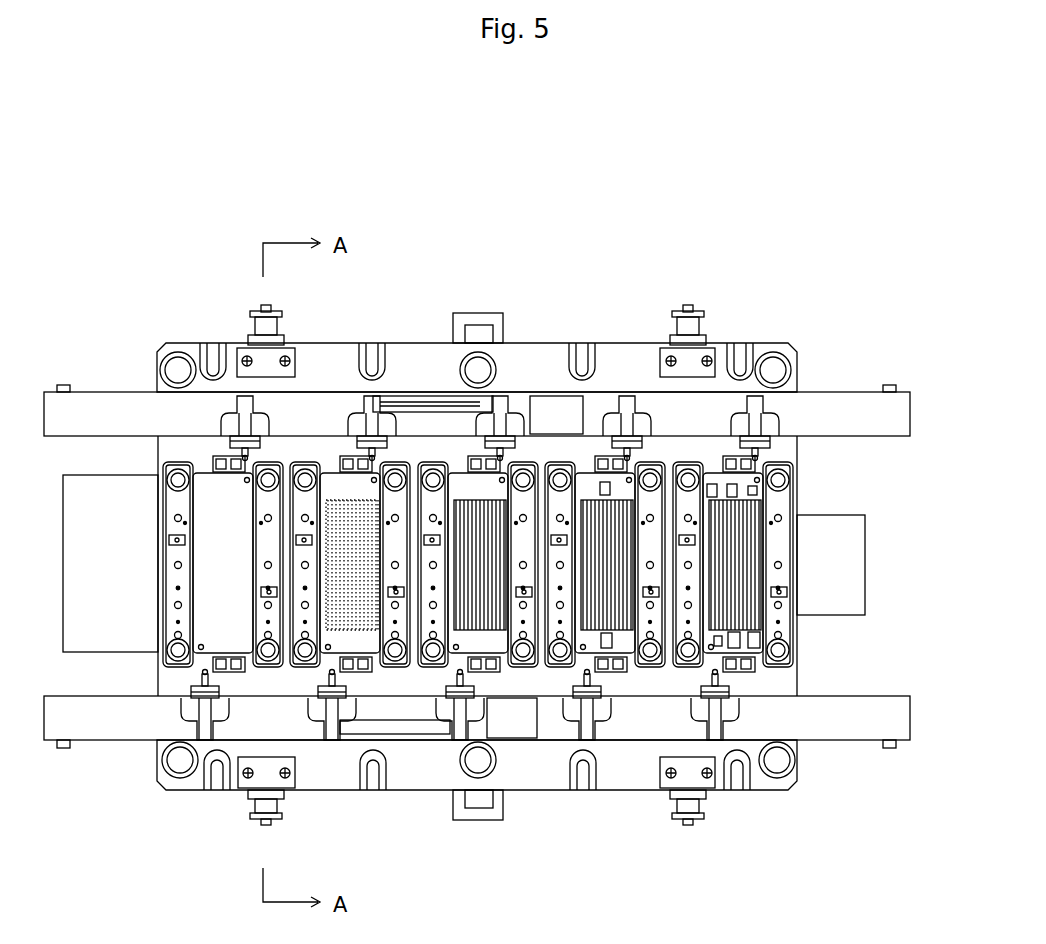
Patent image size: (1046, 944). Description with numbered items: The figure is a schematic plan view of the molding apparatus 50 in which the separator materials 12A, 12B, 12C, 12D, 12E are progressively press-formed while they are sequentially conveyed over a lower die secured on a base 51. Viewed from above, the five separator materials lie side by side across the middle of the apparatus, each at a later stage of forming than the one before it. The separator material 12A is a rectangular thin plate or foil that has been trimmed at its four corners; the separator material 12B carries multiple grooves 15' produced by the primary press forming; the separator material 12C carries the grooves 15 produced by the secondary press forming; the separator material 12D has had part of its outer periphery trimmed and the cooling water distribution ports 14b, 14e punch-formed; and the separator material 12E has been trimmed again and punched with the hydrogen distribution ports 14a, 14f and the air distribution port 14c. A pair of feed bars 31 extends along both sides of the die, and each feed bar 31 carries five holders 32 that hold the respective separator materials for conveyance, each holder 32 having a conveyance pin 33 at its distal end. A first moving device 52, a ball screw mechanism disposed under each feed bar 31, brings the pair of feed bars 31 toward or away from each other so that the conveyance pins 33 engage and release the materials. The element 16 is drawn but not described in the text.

The molding apparatus 50 is at (864, 264).
The base 51 is at (213, 441).
The first moving device 52 is at (250, 816).
The feed bar 31 is at (910, 412).
The holder 32 is at (236, 428).
The conveyance pin 33 is at (244, 454).
The terminal pin 16 is at (248, 477).
The groove 15 is at (635, 532).
The groove 15' is at (339, 532).
The hydrogen distribution port 14a is at (768, 491).
The cooling water distribution port 14b is at (604, 482).
The air distribution port 14c is at (712, 484).
The cooling water distribution port 14e is at (758, 642).
The hydrogen distribution port 14f is at (720, 638).
The separator material 12A is at (213, 520).
The separator material 12B is at (340, 652).
The separator material 12C is at (500, 655).
The separator material 12D is at (628, 652).
The separator material 12E is at (760, 547).